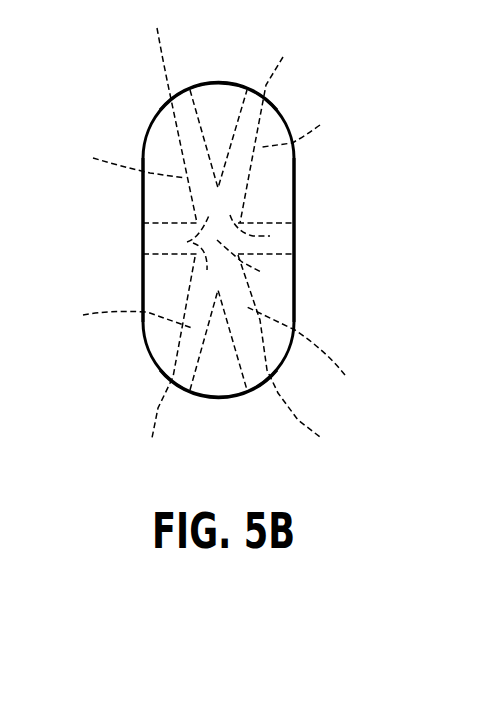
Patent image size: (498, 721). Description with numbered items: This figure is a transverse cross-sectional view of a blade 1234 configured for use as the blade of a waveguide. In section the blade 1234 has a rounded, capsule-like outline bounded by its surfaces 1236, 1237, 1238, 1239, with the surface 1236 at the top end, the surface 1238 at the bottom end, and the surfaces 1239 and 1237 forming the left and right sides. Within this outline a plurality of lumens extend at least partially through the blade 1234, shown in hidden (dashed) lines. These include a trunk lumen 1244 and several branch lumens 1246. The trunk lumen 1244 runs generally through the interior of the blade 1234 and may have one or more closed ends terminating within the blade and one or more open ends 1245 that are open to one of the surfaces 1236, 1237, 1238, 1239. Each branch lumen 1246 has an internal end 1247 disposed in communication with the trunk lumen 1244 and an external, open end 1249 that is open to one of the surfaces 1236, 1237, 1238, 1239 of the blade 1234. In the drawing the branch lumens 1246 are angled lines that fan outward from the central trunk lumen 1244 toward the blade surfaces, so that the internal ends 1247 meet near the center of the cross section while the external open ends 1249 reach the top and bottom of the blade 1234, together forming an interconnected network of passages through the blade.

The blade 1234 is at (140, 103).
The surface of blade 1236 is at (235, 82).
The surface of blade 1237 is at (302, 267).
The surface of blade 1238 is at (247, 402).
The surface of blade 1239 is at (140, 157).
The trunk lumen 1244 is at (263, 273).
The open end of trunk lumen 1245 is at (145, 230).
The branch lumen 1246 is at (214, 252).
The internal end of branch lumen 1247 is at (187, 240).
The external open end of branch lumen 1249 is at (250, 233).